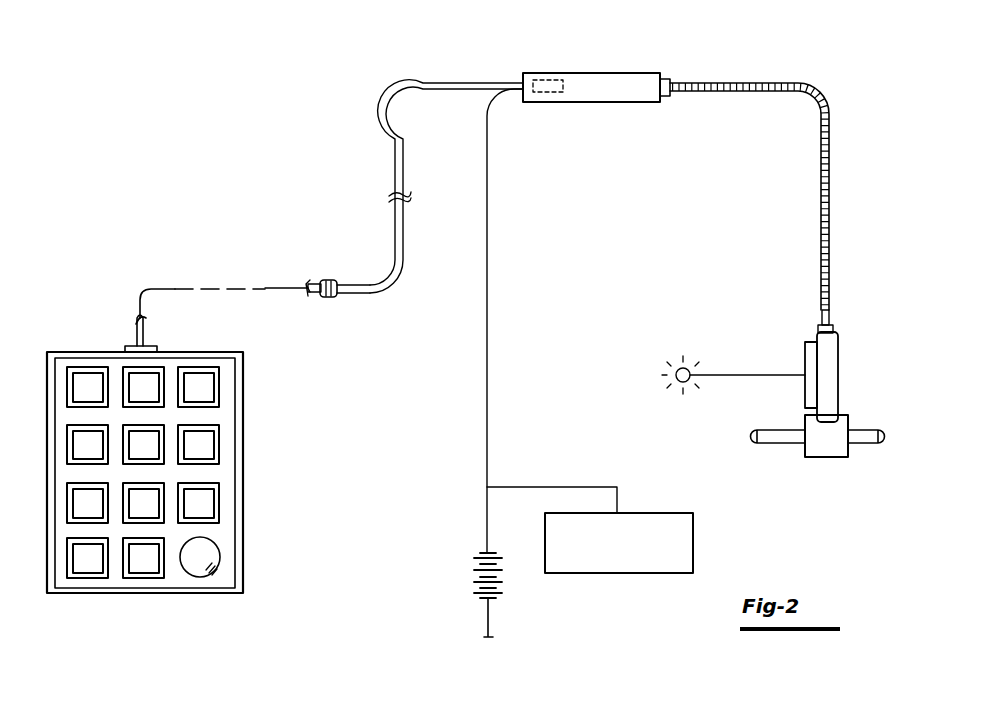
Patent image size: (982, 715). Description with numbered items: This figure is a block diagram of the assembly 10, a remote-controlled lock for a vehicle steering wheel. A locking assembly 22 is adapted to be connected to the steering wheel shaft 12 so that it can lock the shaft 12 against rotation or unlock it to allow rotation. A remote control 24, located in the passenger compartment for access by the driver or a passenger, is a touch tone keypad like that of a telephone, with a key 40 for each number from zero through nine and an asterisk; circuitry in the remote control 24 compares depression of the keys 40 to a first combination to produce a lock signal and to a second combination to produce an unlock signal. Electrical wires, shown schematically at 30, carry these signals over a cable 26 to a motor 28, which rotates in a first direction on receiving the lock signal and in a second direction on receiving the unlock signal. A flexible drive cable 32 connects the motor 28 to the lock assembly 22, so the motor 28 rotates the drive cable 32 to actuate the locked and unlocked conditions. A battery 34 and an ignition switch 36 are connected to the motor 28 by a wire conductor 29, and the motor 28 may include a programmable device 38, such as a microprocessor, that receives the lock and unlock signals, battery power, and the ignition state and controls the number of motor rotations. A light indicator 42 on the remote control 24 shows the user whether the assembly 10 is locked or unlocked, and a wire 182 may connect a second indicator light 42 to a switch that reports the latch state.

The assembly 10 is at (362, 236).
The steering wheel shaft 12 is at (790, 437).
The locking assembly 22 is at (840, 344).
The remote control 24 is at (243, 452).
The cable 26 is at (458, 79).
The motor 28 is at (575, 85).
The wire conductor 29 is at (488, 360).
The electrical wires 30 is at (400, 258).
The flexible drive cable 32 is at (821, 136).
The battery 34 is at (465, 571).
The ignition switch 36 is at (695, 478).
The programmable device 38 is at (536, 72).
The key 40 is at (130, 377).
The light indicator 42 is at (205, 548).
The wire 182 is at (717, 375).